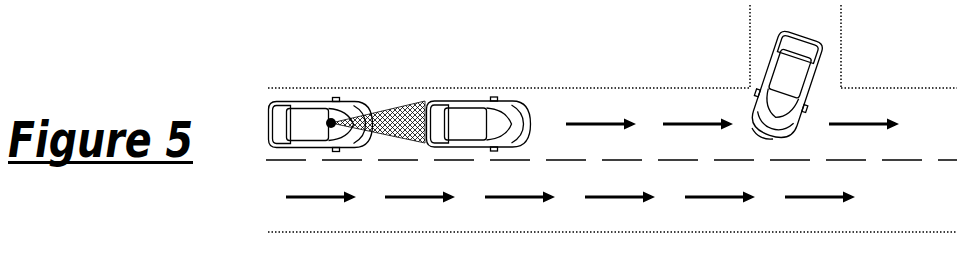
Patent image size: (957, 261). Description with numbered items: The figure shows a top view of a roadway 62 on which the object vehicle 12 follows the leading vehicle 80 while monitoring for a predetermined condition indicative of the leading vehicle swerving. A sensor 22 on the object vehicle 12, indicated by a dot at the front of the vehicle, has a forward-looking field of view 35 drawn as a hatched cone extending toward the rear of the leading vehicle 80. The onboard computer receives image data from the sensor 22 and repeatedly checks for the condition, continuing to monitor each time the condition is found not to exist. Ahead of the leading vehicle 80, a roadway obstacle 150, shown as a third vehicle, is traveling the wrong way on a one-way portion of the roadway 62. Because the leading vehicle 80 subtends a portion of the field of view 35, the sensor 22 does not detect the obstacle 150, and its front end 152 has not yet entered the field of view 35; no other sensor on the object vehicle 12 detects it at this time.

The vehicle 12 is at (269, 119).
The onboard vehicle sensor 22 is at (329, 127).
The field of view 35 is at (386, 96).
The leading vehicle 80 is at (511, 101).
The roadway 62 is at (657, 88).
The roadway obstacle 150 is at (772, 60).
The front end 152 is at (781, 139).